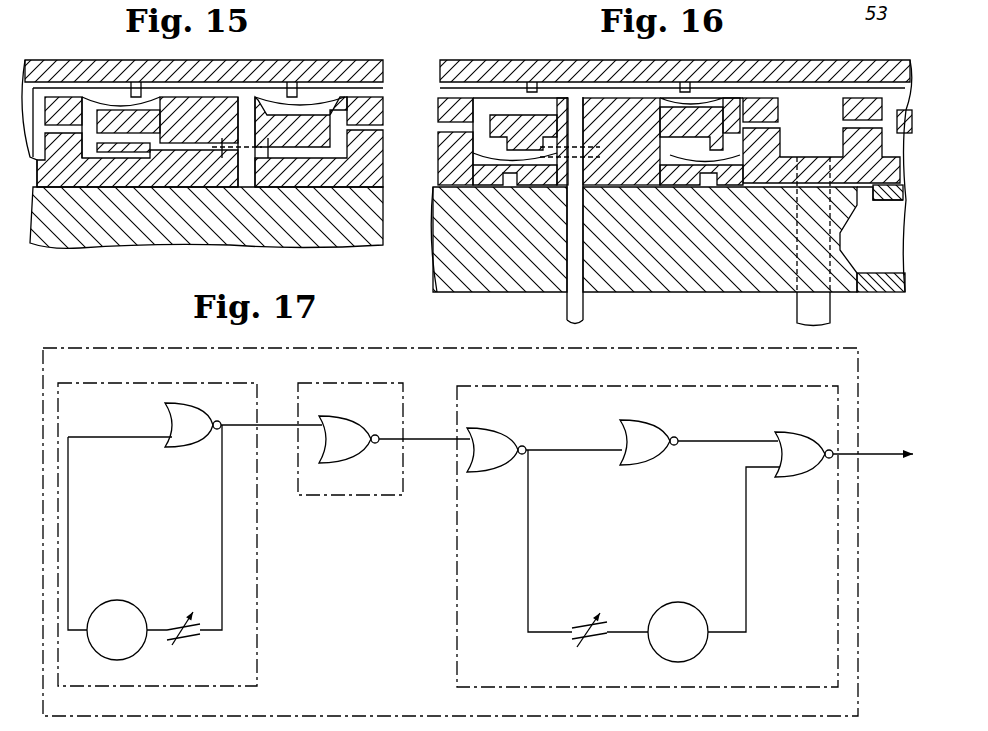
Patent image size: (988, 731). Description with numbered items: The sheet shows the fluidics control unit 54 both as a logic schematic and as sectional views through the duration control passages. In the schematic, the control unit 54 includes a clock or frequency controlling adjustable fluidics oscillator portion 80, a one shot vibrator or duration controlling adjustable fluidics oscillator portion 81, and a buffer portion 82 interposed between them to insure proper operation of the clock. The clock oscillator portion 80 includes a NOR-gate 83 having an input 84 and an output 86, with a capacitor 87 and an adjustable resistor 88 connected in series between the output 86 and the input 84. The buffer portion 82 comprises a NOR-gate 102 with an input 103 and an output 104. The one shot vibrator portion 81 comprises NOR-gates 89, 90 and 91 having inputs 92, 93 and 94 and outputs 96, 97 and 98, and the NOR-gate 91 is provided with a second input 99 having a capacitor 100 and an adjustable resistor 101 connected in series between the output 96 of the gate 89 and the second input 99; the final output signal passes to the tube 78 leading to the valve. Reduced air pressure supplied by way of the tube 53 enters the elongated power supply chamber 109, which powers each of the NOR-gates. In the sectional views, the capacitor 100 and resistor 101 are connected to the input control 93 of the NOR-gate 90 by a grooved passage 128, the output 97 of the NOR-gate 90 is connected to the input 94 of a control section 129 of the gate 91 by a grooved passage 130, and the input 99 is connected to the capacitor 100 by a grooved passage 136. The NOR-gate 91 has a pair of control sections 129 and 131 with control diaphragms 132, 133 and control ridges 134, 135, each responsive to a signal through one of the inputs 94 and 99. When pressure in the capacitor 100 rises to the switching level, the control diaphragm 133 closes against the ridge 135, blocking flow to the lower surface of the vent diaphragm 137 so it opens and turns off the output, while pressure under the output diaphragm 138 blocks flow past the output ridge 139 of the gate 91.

In FIG. 16, the tube 53 is at (797, 312).
In FIG. 17, the fluidics control unit 54 is at (80, 348).
In FIG. 16, the tube 78 is at (585, 313).
In FIG. 17, the tube 78 is at (888, 458).
In FIG. 17, the clock oscillator portion 80 is at (257, 405).
In FIG. 17, the one shot vibrator portion 81 is at (842, 410).
In FIG. 17, the buffer portion 82 is at (348, 500).
In FIG. 17, the NOR-gate 83 is at (183, 440).
In FIG. 17, the input 84 is at (147, 435).
In FIG. 17, the output 86 is at (222, 426).
In FIG. 17, the capacitor 87 is at (115, 598).
In FIG. 17, the adjustable resistor 88 is at (172, 627).
In FIG. 17, the NOR-gate 89 is at (508, 434).
In FIG. 15, the NOR-gate 90 is at (237, 72).
In FIG. 17, the NOR-gate 90 is at (653, 430).
In FIG. 16, the NOR-gate 91 is at (585, 85).
In FIG. 17, the NOR-gate 91 is at (803, 433).
In FIG. 17, the input 92 is at (463, 433).
In FIG. 15, the input 93 is at (122, 174).
In FIG. 17, the input 93 is at (612, 448).
In FIG. 16, the input 94 is at (530, 160).
In FIG. 17, the input 94 is at (768, 443).
In FIG. 17, the output 96 is at (540, 452).
In FIG. 15, the output 97 is at (248, 155).
In FIG. 17, the output 97 is at (686, 445).
In FIG. 16, the output 98 is at (580, 147).
In FIG. 17, the output 98 is at (828, 459).
In FIG. 16, the second input 99 is at (708, 167).
In FIG. 17, the second input 99 is at (760, 468).
In FIG. 16, the capacitor 100 is at (890, 242).
In FIG. 17, the capacitor 100 is at (700, 591).
In FIG. 17, the adjustable resistor 101 is at (582, 627).
In FIG. 17, the NOR-gate 102 is at (356, 416).
In FIG. 17, the input 103 is at (313, 430).
In FIG. 17, the output 104 is at (379, 443).
In FIG. 16, the power supply chamber 109 is at (822, 116).
In FIG. 15, the grooved passage 128 is at (73, 189).
In FIG. 16, the control section 129 is at (484, 170).
In FIG. 15, the grooved passage 130 is at (283, 188).
In FIG. 16, the grooved passage 130 is at (512, 175).
In FIG. 16, the control section 131 is at (668, 170).
In FIG. 16, the control diaphragm 132 is at (552, 165).
In FIG. 16, the control diaphragm 133 is at (692, 172).
In FIG. 16, the control ridge 134 is at (540, 148).
In FIG. 16, the control ridge 135 is at (600, 146).
In FIG. 16, the grooved passage 136 is at (770, 183).
In FIG. 16, the vent diaphragm 137 is at (499, 97).
In FIG. 16, the output diaphragm 138 is at (724, 100).
In FIG. 16, the output ridge 139 is at (708, 96).